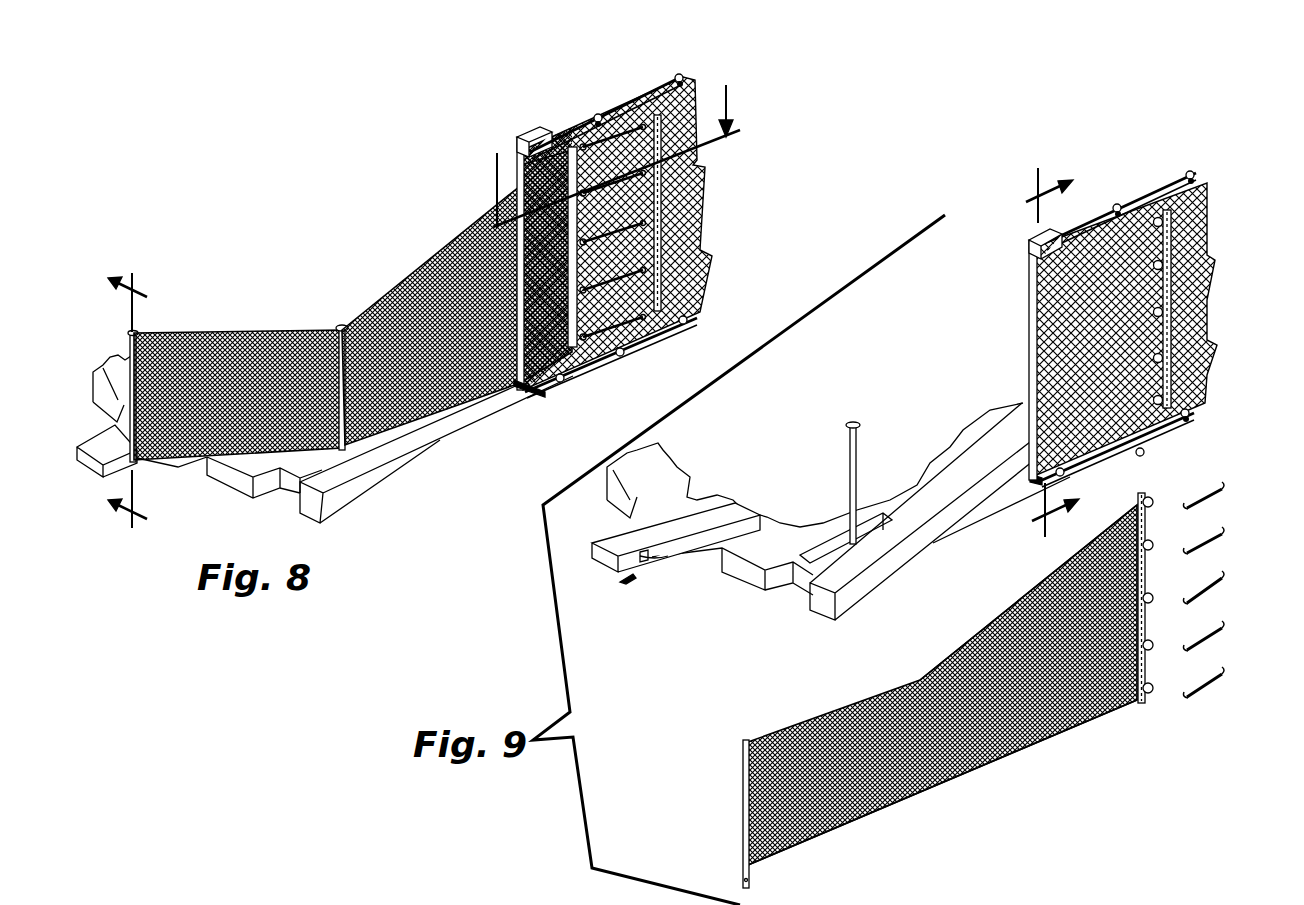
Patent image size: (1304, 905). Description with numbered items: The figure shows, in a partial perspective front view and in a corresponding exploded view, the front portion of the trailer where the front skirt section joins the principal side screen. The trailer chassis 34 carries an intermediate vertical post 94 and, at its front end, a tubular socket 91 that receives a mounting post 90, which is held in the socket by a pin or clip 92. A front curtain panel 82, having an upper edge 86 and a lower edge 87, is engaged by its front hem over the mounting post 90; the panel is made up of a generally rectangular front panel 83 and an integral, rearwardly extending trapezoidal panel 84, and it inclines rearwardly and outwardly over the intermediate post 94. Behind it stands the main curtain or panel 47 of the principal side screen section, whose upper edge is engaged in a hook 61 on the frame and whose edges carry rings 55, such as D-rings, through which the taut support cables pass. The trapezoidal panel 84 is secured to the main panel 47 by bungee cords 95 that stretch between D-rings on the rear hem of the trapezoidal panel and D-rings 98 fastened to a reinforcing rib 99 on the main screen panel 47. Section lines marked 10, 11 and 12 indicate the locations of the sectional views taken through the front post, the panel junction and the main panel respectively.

In FIG. 8, the section line 10- 10 is at (127, 405).
In FIG. 8, the section line 11- 11 is at (615, 156).
In FIG. 9, the section line 12- 12 is at (1072, 352).
In FIG. 9, the chassis 34 is at (830, 605).
In FIG. 8, the curtain or panel 47 is at (700, 98).
In FIG. 9, the curtain or panel 47 is at (1193, 313).
In FIG. 8, the rings 55 is at (679, 74).
In FIG. 9, the rings 55 is at (1117, 205).
In FIG. 9, the hook 61 is at (1037, 230).
In FIG. 8, the front curtain panel 82 is at (180, 325).
In FIG. 8, the front panel 83 is at (250, 350).
In FIG. 8, the trapezoidal panel 84 is at (407, 307).
In FIG. 9, the trapezoidal panel 84 is at (967, 657).
In FIG. 9, the upper edge 86 is at (843, 710).
In FIG. 9, the lower edge 87 is at (930, 787).
In FIG. 9, the mounting post 90 is at (744, 880).
In FIG. 9, the tubular socket 91 is at (645, 560).
In FIG. 9, the pin or clip 92 is at (623, 582).
In FIG. 8, the intermediate vertical post 94 is at (340, 325).
In FIG. 9, the intermediate vertical post 94 is at (846, 425).
In FIG. 8, the bungee cords 95 is at (617, 110).
In FIG. 9, the D-rings 98 is at (1157, 213).
In FIG. 9, the reinforcing rib 99 is at (1173, 233).